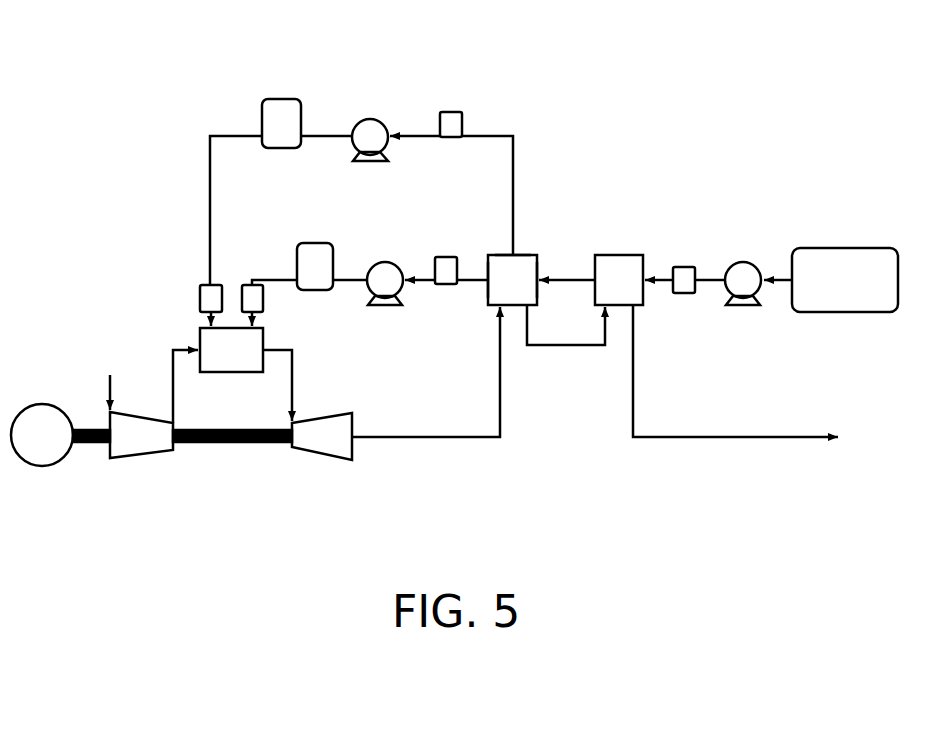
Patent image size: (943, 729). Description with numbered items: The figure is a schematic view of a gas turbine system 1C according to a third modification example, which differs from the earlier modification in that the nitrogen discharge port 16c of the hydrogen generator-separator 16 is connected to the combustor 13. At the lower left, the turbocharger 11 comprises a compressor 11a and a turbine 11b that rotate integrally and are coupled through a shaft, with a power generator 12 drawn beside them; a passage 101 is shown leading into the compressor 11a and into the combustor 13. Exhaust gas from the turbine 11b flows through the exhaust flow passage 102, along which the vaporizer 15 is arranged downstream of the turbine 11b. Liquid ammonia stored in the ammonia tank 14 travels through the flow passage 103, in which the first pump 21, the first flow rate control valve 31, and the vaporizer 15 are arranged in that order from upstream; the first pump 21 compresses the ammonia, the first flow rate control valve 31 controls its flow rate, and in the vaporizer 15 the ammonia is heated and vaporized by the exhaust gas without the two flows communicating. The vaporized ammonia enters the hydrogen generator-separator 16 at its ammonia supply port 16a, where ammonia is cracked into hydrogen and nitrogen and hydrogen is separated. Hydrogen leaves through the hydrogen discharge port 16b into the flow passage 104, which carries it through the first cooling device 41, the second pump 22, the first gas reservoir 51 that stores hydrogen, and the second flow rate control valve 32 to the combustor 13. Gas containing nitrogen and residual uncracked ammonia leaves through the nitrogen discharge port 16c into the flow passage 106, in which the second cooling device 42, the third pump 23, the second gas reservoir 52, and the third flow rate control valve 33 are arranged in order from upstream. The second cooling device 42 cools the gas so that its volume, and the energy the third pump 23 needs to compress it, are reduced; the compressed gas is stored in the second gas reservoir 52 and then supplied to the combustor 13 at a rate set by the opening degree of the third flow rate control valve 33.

The gas turbine system 1C is at (67, 62).
The turbocharger 11 is at (200, 497).
The compressor 11a is at (143, 458).
The turbine 11b is at (323, 459).
The power generator 12 is at (43, 467).
The combustor 13 is at (228, 374).
The ammonia tank 14 is at (845, 248).
The vaporizer 15 is at (618, 255).
The hydrogen generator-separator 16 is at (521, 254).
The ammonia supply port 16a is at (538, 276).
The hydrogen discharge port 16b is at (487, 274).
The nitrogen discharge port 16c is at (512, 252).
The first pump 21 is at (743, 262).
The second pump 22 is at (385, 262).
The third pump 23 is at (370, 119).
The first flow rate control valve 31 is at (684, 267).
The second flow rate control valve 32 is at (264, 298).
The third flow rate control valve 33 is at (199, 297).
The first cooling device 41 is at (445, 257).
The second cooling device 42 is at (450, 112).
The first gas reservoir 51 is at (314, 243).
The second gas reservoir 52 is at (280, 99).
The air line 101 is at (172, 362).
The exhaust flow passage 102 is at (293, 384).
The flow passage 103 is at (565, 287).
The flow passage 104 is at (256, 277).
The flow passage 106 is at (208, 148).